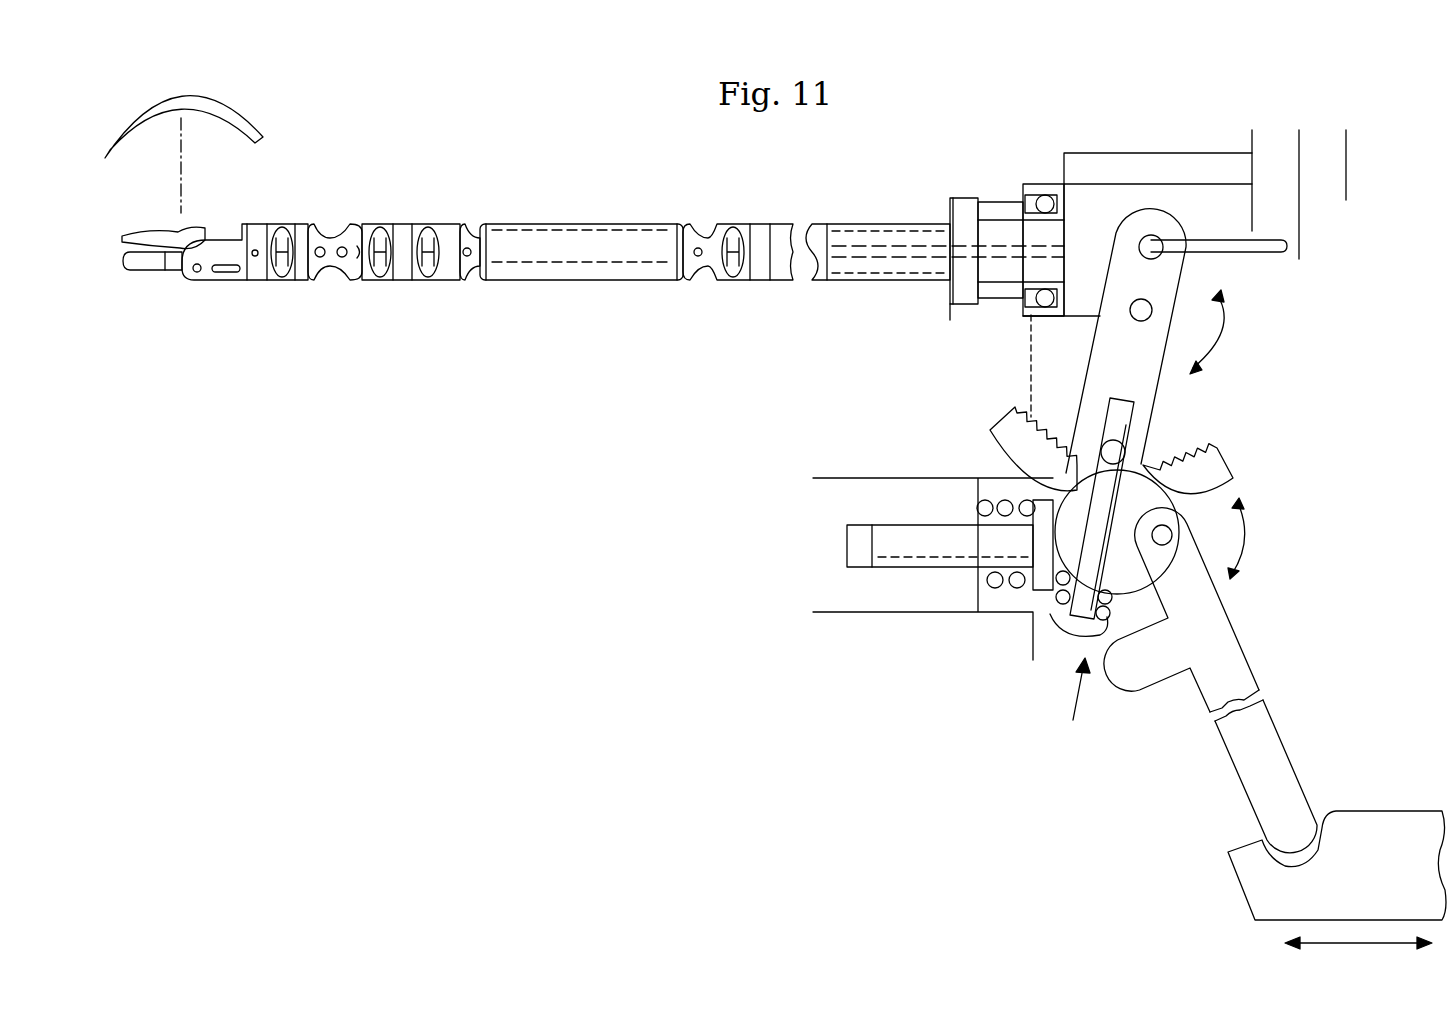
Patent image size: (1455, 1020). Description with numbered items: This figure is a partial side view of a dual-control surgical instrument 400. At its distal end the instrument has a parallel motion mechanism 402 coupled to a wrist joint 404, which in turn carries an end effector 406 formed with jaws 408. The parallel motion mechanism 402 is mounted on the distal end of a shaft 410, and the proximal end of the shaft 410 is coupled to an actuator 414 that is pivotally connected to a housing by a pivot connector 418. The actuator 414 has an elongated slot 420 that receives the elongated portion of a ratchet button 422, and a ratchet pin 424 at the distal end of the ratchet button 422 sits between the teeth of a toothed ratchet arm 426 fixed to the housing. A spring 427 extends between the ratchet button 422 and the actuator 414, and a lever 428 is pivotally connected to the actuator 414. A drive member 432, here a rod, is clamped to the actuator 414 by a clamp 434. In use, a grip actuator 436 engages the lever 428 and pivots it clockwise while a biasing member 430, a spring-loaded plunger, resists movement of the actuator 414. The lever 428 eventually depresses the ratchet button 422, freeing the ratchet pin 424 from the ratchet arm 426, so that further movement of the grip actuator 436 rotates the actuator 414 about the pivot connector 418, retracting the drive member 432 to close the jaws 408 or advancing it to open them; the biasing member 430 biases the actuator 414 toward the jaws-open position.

The dual-control surgical instrument 400 is at (1356, 100).
The parallel motion mechanism 402 is at (563, 200).
The wrist joint 404 is at (326, 225).
The end effector 406 is at (223, 283).
The jaws 408 is at (148, 236).
The shaft 410 is at (726, 226).
The actuator 414 is at (1205, 235).
The pivot connector 418 is at (1134, 302).
The elongated slot 420 is at (1122, 410).
The ratchet button 422 is at (1070, 627).
The ratchet pin 424 is at (1104, 442).
The toothed ratchet arm 426 is at (1233, 462).
The spring 427 is at (1052, 597).
The lever 428 is at (1225, 757).
The biasing member 430 is at (918, 540).
The drive member 432 is at (874, 245).
The clamp 434 is at (162, 97).
The grip actuator 436 is at (1383, 810).